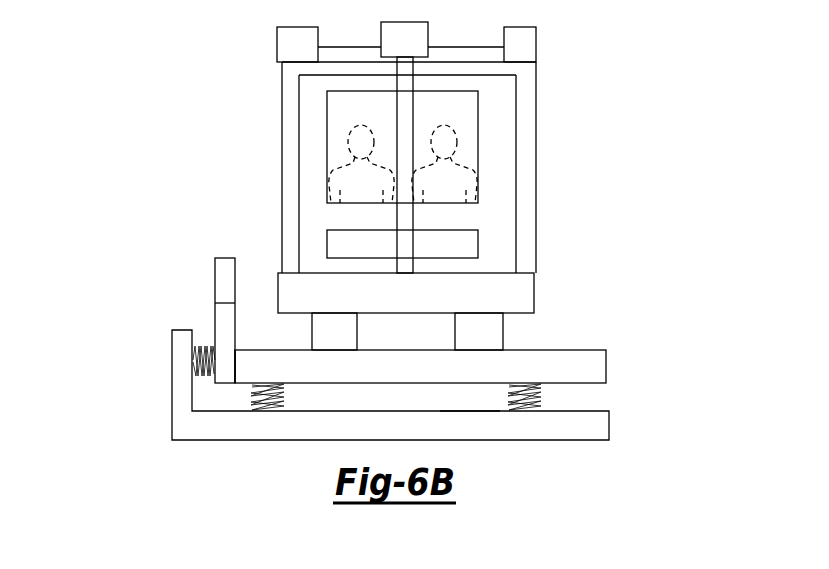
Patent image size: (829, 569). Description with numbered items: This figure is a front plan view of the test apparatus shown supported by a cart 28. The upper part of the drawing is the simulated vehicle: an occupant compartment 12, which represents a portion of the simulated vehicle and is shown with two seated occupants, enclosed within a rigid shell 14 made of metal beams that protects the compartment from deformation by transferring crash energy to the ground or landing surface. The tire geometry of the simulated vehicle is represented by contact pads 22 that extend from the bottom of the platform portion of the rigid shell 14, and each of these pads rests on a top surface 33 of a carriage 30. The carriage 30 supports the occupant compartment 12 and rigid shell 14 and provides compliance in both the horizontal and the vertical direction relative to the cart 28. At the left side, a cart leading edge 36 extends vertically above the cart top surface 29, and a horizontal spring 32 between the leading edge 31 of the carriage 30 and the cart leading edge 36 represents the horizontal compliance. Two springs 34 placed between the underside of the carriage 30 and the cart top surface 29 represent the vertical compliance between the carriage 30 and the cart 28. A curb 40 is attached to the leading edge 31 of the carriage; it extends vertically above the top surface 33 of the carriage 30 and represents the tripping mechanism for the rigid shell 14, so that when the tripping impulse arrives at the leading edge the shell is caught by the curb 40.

The occupant compartment 12 is at (484, 162).
The rigid shell 14 is at (292, 125).
The contact pads 22 is at (500, 336).
The cart 28 is at (609, 421).
The cart top surface 29 is at (472, 410).
The carriage 30 is at (250, 355).
The leading edge of the carriage 31 is at (222, 327).
The horizontal spring 32 is at (207, 343).
The top surface of the carriage 33 is at (578, 335).
The springs 34 is at (252, 400).
The cart leading edge 36 is at (170, 369).
The curb 40 is at (225, 258).